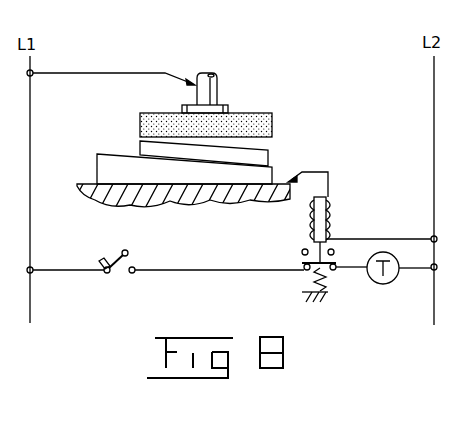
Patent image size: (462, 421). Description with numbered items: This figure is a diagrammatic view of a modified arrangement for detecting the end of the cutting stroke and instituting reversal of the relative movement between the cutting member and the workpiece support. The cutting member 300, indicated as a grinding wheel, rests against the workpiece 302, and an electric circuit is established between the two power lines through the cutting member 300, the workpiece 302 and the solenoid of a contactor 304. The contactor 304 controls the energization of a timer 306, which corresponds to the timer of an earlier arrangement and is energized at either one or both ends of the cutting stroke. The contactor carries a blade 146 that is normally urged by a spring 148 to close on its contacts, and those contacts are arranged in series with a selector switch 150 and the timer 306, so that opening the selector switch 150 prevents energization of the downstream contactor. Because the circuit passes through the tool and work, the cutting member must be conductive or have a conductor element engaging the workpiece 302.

The cutting member 300 is at (272, 127).
The workpiece 302 is at (258, 163).
The contactor 304 is at (328, 206).
The timer 306 is at (383, 252).
The blade 146 is at (305, 262).
The spring 148 is at (323, 283).
The selector switch 150 is at (127, 259).